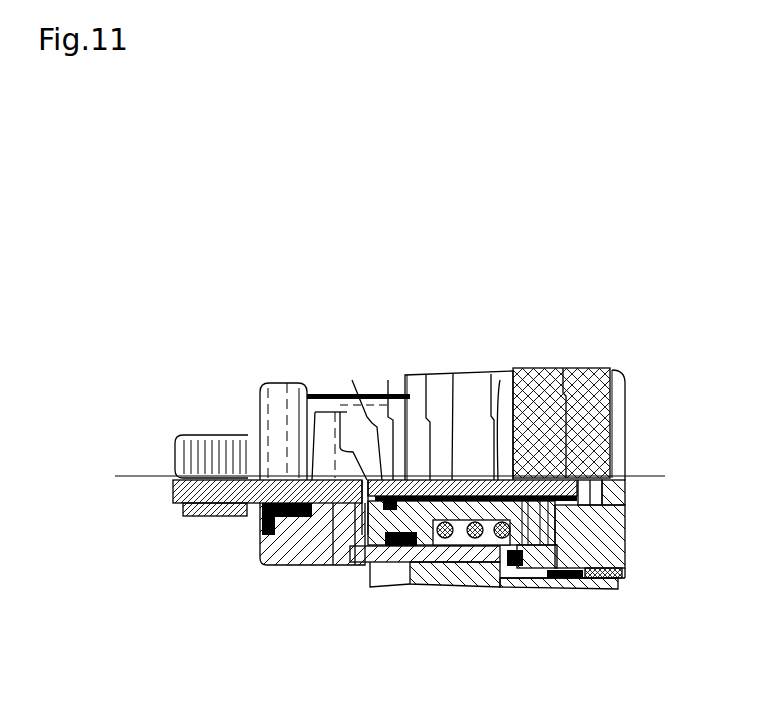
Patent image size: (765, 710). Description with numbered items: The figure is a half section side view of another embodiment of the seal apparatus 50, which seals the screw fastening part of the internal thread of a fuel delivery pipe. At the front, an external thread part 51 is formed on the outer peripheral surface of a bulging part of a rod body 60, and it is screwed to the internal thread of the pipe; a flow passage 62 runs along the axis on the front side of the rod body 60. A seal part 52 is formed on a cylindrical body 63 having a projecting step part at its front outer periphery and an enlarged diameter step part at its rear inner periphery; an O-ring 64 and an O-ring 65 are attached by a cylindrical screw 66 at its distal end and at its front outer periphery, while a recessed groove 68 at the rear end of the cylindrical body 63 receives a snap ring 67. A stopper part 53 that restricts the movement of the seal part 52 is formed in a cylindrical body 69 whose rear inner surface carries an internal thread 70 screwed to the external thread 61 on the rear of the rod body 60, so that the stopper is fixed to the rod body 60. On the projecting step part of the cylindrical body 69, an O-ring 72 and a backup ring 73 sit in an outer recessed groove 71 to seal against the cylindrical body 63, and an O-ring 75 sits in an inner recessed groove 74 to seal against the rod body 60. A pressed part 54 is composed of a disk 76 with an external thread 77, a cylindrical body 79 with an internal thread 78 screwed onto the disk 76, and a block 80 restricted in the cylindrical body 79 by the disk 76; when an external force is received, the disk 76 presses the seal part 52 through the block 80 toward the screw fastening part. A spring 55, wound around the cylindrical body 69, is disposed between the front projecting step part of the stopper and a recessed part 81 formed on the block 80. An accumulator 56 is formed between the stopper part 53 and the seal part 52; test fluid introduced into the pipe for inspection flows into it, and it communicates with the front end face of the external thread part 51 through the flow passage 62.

The seal apparatus 50 is at (404, 370).
The external thread part 51 is at (206, 414).
The seal part 52 is at (296, 581).
The stopper part 53 is at (450, 610).
The pressed part 54 is at (596, 633).
The spring 55 is at (513, 610).
The accumulator 56 is at (335, 412).
The rod body 60 is at (338, 577).
The external thread 61 is at (489, 614).
The flow passage 62 is at (283, 391).
The cylindrical body 63 is at (314, 587).
The O-ring 64 is at (237, 552).
The O-ring 65 is at (316, 412).
The cylindrical screw 66 is at (262, 528).
The snap ring 67 is at (524, 594).
The recessed groove 68 is at (491, 374).
The cylindrical body 69 is at (453, 374).
The internal thread 70 is at (500, 380).
The recessed groove 71 is at (388, 618).
The O-ring 72 is at (388, 380).
The backup ring 73 is at (426, 375).
The recessed groove 74 is at (420, 582).
The O-ring 75 is at (352, 380).
The disk 76 is at (611, 524).
The external thread 77 is at (601, 599).
The internal thread 78 is at (625, 615).
The cylindrical body 79 is at (565, 381).
The block 80 is at (563, 372).
The recessed part 81 is at (559, 609).